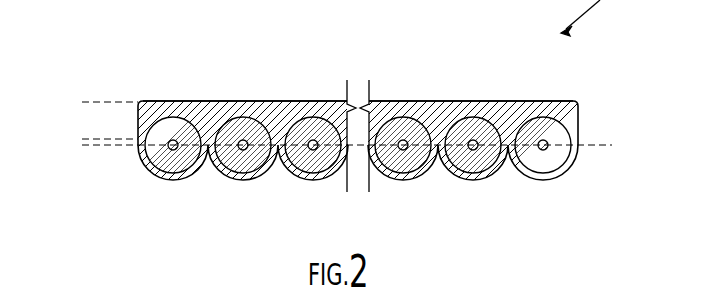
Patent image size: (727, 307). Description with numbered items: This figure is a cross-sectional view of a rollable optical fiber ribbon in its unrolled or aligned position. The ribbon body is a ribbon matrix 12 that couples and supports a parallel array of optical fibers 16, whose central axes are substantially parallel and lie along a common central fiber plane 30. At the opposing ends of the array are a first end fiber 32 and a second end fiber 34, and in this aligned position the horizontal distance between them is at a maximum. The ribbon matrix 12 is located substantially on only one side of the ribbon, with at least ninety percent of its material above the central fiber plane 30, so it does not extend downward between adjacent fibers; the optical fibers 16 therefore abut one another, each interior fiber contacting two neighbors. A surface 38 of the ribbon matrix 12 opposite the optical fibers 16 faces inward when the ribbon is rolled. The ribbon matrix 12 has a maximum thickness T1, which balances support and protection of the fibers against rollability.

The ribbon matrix 12 is at (571, 107).
The optical fibers 16 is at (570, 158).
The central fiber plane 30 is at (108, 145).
The first end fiber 32 is at (171, 178).
The second end fiber 34 is at (565, 176).
The surface of ribbon matrix 38 is at (482, 100).
The maximum thickness T1 is at (90, 102).